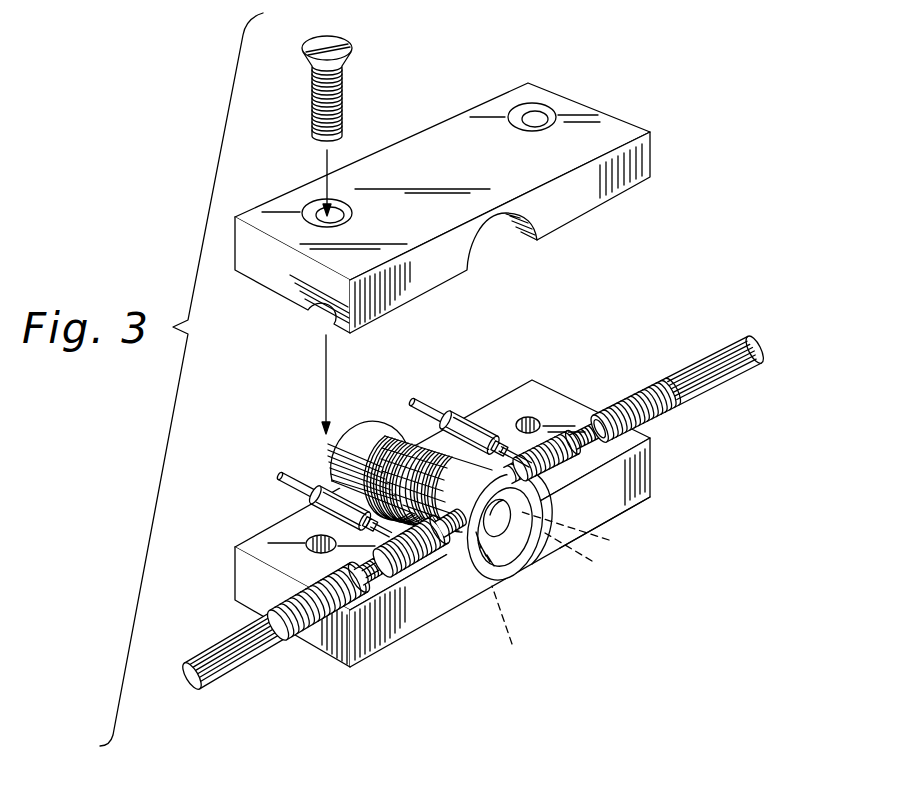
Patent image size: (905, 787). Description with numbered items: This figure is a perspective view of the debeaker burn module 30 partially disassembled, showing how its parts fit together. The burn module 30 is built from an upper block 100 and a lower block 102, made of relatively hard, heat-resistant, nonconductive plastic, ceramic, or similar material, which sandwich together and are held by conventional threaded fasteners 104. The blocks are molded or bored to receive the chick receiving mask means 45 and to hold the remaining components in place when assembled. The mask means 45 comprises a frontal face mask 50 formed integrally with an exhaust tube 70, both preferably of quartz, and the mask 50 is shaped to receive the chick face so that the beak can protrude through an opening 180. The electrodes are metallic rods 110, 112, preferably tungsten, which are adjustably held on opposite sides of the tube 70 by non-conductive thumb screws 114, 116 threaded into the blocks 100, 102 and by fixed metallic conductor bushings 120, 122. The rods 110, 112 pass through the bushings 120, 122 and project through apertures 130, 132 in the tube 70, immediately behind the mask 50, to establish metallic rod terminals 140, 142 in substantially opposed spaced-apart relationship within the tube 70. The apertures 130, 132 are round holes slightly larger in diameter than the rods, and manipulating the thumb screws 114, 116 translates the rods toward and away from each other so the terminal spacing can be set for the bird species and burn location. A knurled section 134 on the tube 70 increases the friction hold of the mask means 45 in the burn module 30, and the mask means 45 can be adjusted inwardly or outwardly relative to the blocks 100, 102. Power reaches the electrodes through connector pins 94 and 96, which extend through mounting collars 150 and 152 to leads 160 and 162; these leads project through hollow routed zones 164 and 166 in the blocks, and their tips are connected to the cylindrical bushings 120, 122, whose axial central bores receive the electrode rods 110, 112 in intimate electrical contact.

The burn module 30 is at (706, 124).
The mask means 45 is at (531, 553).
The frontal face mask 50 is at (530, 563).
The exhaust tube 70 is at (370, 400).
The connector pin 94 is at (430, 406).
The connector pin 96 is at (280, 475).
The upper block 100 is at (643, 178).
The lower block 102 is at (540, 386).
The threaded fasteners 104 is at (311, 116).
The metallic rod 110 is at (640, 462).
The metallic rod 112 is at (385, 602).
The thumb screw 114 is at (727, 383).
The thumb screw 116 is at (214, 673).
The conductor bushing 120 is at (603, 510).
The conductor bushing 122 is at (411, 565).
The aperture 130 is at (579, 531).
The aperture 132 is at (454, 573).
The knurled section 134 is at (413, 440).
The metallic rod terminal 140 is at (582, 553).
The metallic rod terminal 142 is at (510, 625).
The mounting collar 150 is at (474, 422).
The mounting collar 152 is at (318, 519).
The lead 160 is at (518, 461).
The lead 162 is at (308, 573).
The hollow routed zone 164 is at (504, 446).
The hollow routed zone 166 is at (326, 483).
The opening 180 is at (505, 560).